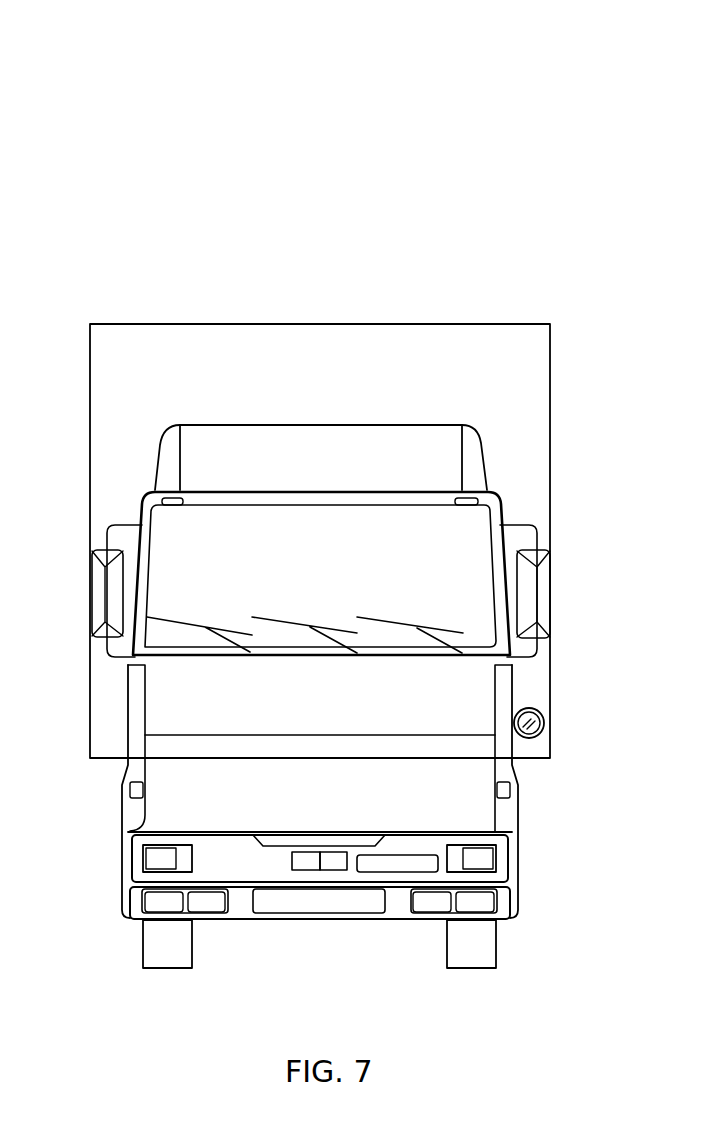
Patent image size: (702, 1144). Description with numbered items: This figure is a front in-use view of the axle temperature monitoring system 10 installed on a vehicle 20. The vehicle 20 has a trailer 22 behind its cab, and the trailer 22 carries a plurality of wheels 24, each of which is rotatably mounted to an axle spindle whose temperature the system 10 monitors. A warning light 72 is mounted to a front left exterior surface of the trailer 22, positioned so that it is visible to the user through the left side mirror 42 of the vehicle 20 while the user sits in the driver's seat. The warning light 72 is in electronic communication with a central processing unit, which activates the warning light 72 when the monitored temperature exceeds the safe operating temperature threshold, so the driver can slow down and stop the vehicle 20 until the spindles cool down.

The axle temperature monitoring system 10 is at (80, 218).
The vehicle 20 is at (213, 753).
The trailer 22 is at (528, 390).
The wheels 24 is at (173, 947).
The left side mirror 42 is at (545, 583).
The warning light 72 is at (542, 721).